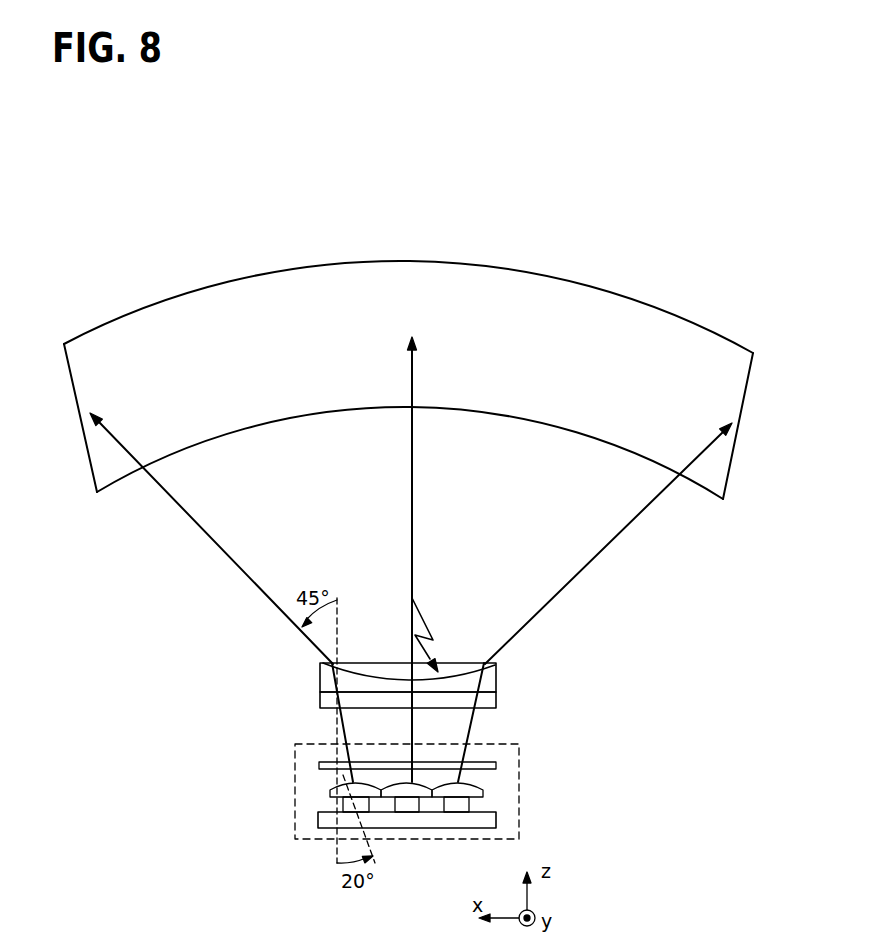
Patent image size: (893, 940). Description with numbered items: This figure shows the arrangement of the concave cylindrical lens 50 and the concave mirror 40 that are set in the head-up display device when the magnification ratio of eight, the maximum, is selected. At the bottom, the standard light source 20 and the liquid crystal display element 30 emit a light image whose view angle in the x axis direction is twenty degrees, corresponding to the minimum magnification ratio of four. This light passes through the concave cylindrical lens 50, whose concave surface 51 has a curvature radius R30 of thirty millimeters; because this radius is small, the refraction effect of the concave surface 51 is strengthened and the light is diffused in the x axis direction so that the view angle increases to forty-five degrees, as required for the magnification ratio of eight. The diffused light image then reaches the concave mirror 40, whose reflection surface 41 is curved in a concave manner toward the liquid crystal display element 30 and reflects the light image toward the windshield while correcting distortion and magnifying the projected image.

The standard light source 20 is at (495, 735).
The liquid crystal display element 30 is at (487, 707).
The concave mirror 40 is at (263, 270).
The reflection surface 41 is at (177, 335).
The concave cylindrical lens 50 is at (490, 687).
The concave surface 51 is at (465, 670).
The curvature radius of the concave surface R30 is at (422, 622).